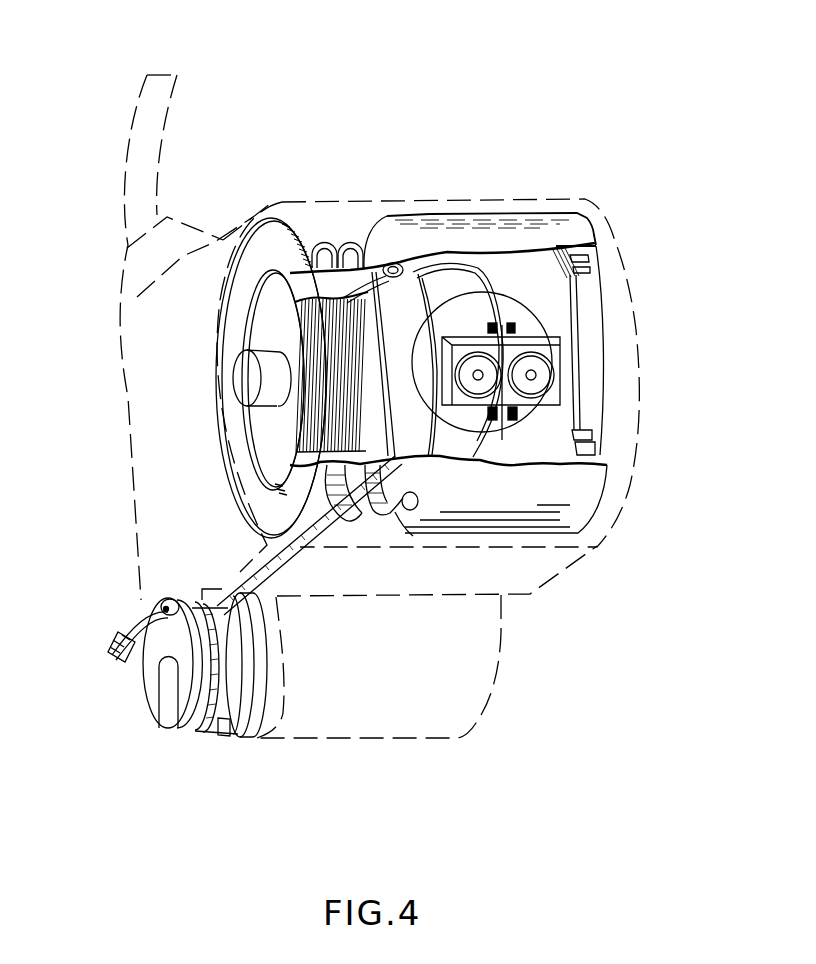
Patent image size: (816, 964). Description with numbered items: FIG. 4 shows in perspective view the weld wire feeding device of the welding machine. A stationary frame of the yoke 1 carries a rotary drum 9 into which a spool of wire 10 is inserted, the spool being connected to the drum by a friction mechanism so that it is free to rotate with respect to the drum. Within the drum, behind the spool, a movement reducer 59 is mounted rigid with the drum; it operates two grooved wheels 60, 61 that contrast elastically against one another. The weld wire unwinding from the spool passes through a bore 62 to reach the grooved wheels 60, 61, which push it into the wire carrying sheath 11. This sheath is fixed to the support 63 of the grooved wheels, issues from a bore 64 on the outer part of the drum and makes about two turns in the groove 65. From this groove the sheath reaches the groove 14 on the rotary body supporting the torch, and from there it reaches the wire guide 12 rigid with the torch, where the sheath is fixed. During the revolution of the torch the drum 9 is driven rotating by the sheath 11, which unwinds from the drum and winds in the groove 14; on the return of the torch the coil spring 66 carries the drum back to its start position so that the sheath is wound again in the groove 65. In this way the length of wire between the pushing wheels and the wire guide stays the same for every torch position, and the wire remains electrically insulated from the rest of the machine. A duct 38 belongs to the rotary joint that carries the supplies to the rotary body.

The stationary frame of the yoke 1 is at (150, 375).
The rotary drum 9 is at (272, 302).
The spool of wire 10 is at (272, 367).
The duct 38 is at (284, 280).
The groove 65 is at (347, 218).
The bore 62 is at (396, 263).
The movement reducer 59 is at (473, 313).
The grooved wheel 60 is at (489, 364).
The grooved wheel 61 is at (537, 362).
The coil spring 66 is at (583, 300).
The support of the grooved wheels 63 is at (515, 415).
The bore 64 is at (415, 497).
The wire carrying sheath 11 is at (392, 510).
The wire guide 12 is at (110, 642).
The groove 14 is at (197, 730).